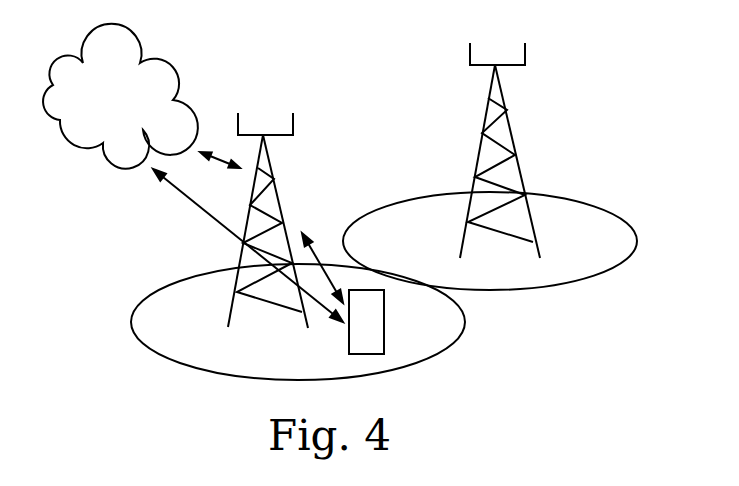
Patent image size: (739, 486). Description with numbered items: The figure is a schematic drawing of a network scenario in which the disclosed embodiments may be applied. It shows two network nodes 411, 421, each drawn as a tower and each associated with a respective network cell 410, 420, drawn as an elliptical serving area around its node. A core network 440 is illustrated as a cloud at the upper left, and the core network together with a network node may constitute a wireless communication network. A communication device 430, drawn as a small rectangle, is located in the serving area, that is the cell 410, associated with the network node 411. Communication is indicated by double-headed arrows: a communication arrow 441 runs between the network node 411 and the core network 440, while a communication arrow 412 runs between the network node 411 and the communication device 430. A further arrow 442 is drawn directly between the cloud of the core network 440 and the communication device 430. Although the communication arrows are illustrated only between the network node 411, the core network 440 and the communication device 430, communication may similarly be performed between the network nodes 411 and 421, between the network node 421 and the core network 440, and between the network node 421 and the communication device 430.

The network cell 410 is at (130, 320).
The network node 411 is at (275, 177).
The communication arrow 412 is at (327, 268).
The network cell 420 is at (568, 202).
The network node 421 is at (512, 130).
The communication device 430 is at (385, 320).
The core network 440 is at (120, 96).
The communication arrow 441 is at (220, 151).
The link between cloud and device 442 is at (248, 245).